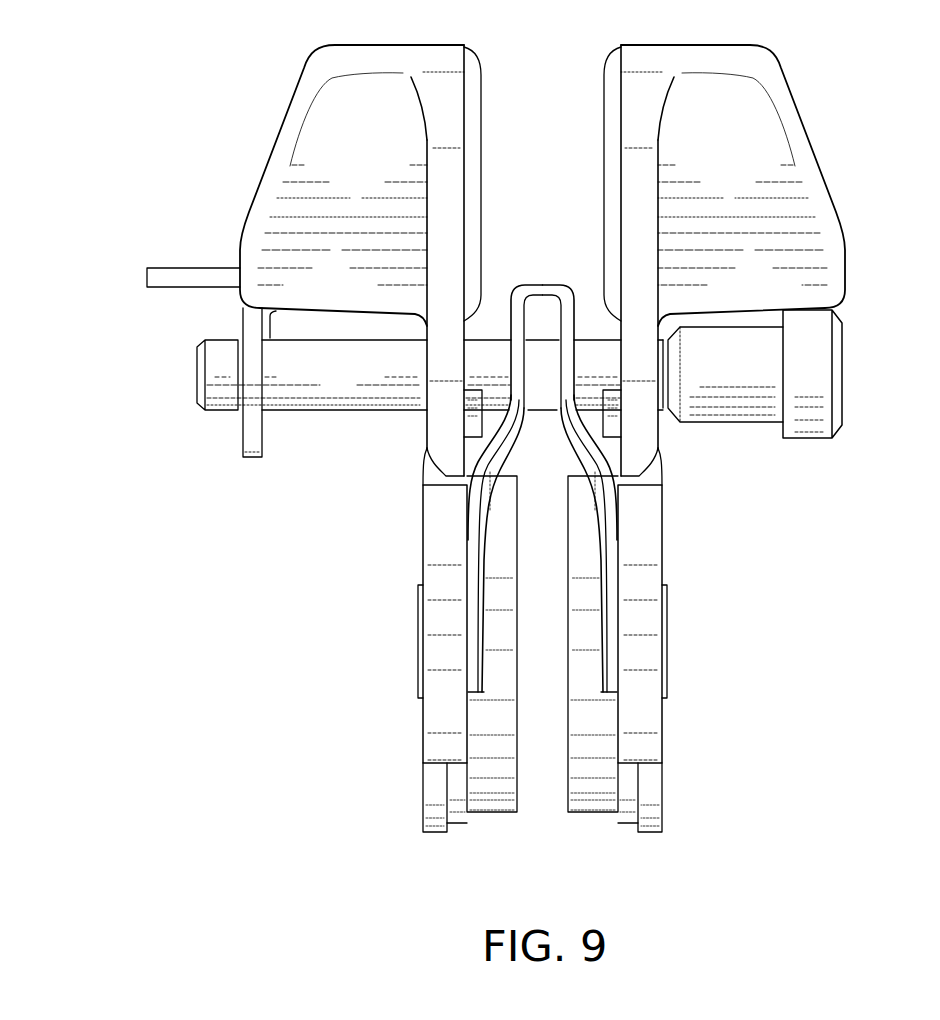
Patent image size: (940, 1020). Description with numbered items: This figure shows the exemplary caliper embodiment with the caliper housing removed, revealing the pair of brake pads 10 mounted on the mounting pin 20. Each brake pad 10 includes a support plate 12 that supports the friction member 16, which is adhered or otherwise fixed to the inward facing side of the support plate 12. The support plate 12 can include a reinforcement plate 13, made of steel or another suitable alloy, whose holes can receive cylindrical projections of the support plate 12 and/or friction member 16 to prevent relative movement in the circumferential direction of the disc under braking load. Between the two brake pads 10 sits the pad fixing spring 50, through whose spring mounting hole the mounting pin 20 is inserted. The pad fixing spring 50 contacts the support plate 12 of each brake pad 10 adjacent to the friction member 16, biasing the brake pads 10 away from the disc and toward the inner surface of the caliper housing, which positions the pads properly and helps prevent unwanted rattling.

The brake pad 10 is at (230, 127).
The support plate 12 is at (637, 275).
The reinforcement plate 13 is at (445, 715).
The friction member 16 is at (594, 814).
The mounting pin 20 is at (340, 378).
The pad fixing spring 50 is at (584, 452).